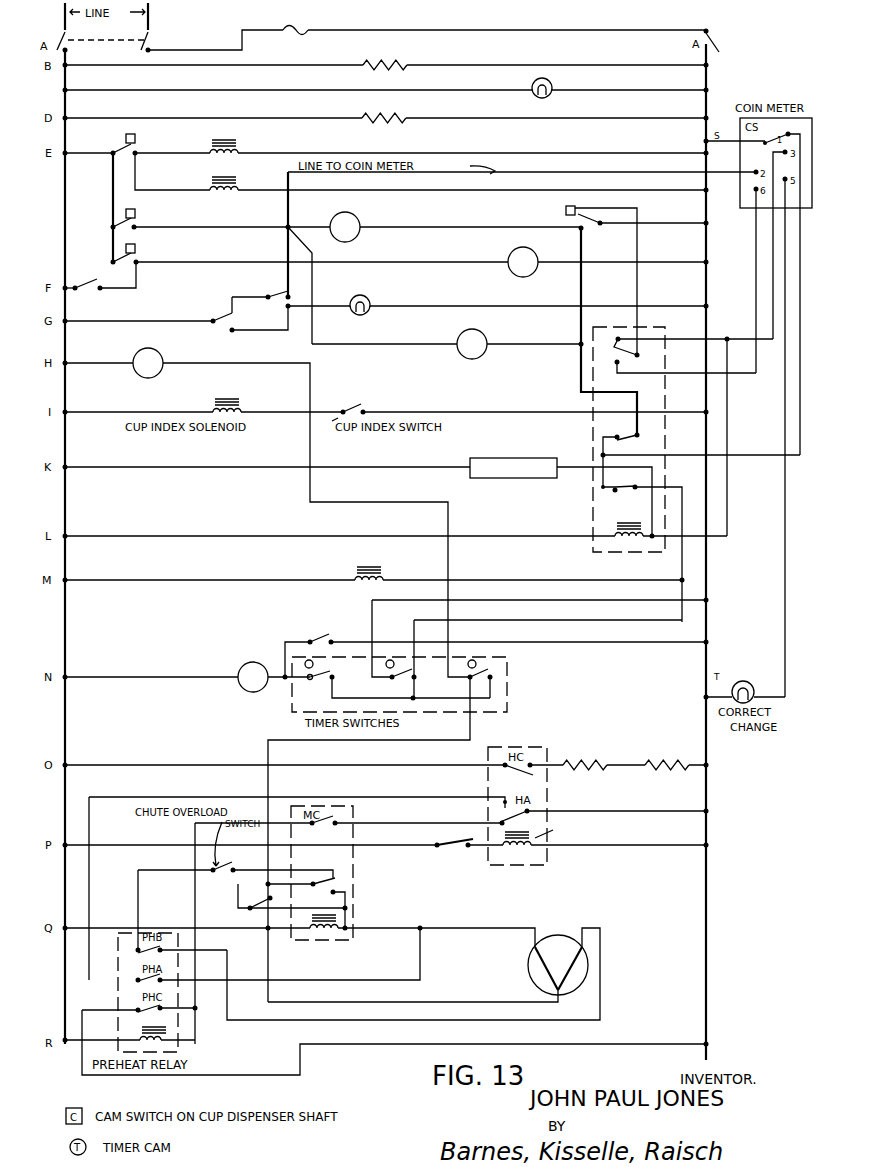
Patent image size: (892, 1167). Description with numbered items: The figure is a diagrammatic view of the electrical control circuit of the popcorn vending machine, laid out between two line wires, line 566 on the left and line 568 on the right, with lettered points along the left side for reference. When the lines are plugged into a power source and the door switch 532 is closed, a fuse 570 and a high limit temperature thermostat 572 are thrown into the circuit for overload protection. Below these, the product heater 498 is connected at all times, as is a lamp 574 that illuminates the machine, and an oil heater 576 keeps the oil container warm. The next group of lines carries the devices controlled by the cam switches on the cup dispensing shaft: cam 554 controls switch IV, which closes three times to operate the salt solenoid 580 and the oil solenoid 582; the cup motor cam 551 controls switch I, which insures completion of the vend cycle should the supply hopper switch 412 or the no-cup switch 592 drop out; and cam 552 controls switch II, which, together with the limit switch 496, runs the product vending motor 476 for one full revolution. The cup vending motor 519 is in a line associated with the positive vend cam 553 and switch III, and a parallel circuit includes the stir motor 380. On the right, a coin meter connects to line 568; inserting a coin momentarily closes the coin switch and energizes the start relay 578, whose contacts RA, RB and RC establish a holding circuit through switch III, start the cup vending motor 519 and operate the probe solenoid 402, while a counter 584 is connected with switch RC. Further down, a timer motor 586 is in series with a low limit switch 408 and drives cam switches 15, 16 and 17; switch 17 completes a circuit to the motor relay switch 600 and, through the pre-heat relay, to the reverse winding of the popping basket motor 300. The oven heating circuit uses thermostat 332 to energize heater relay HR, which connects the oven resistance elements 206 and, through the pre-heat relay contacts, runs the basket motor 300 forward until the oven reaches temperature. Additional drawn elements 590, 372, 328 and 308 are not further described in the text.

The line 566 is at (60, 22).
The line 568 is at (150, 26).
The door switch 532 is at (106, 31).
The fuse 570 is at (316, 24).
The high limit temperature thermostat 572 is at (733, 40).
The product heater 498 is at (366, 64).
The lamp 574 is at (531, 87).
The oil heater 576 is at (407, 118).
The cam 554 is at (137, 138).
The solenoid 580 is at (238, 145).
The solenoid 582 is at (208, 186).
The cup motor cam 551 is at (137, 213).
The cam 552 is at (137, 248).
The limit switch 496 is at (96, 274).
The no-cup switch 592 is at (289, 290).
The supply hopper switch 412 is at (220, 336).
The cup vending motor 519 is at (358, 247).
The positive vend cam 553 is at (565, 215).
The product vending motor 476 is at (503, 273).
The sold out lamp 590 is at (367, 298).
The stir motor 380 is at (488, 343).
The product mix motor 372 is at (163, 360).
The counter 584 is at (468, 470).
The start relay 578 is at (610, 535).
The probe solenoid 402 is at (410, 560).
The low limit switch 408 is at (290, 641).
The timer motor 586 is at (238, 669).
The cam switch 15 is at (397, 680).
The cam switch 16 is at (411, 674).
The cam switch 17 is at (497, 664).
The oven resistance elements 206 is at (666, 772).
The chute overload switch 328 is at (236, 868).
The reversing switch 308 is at (247, 902).
The motor relay switch 600 is at (355, 886).
The thermostat 332 is at (447, 849).
The popping basket motor 300 is at (505, 965).